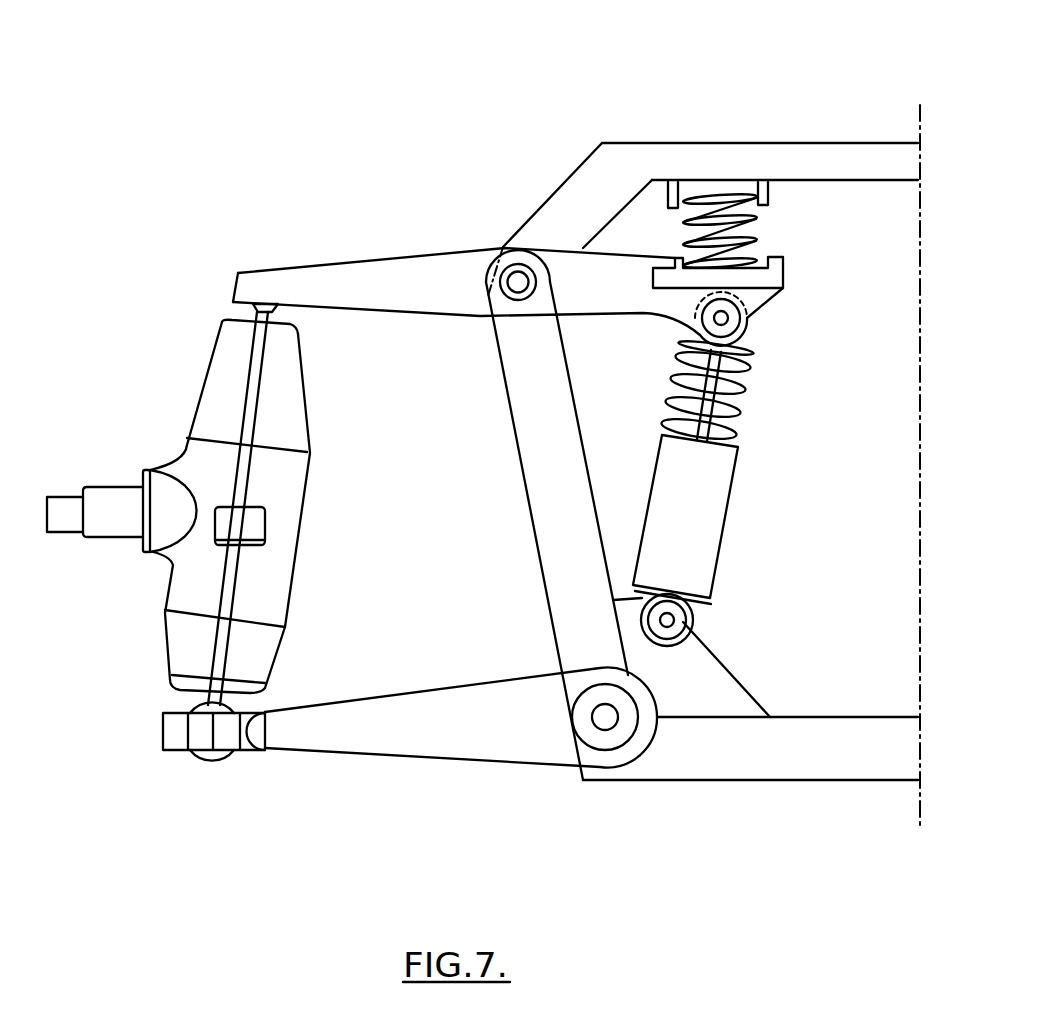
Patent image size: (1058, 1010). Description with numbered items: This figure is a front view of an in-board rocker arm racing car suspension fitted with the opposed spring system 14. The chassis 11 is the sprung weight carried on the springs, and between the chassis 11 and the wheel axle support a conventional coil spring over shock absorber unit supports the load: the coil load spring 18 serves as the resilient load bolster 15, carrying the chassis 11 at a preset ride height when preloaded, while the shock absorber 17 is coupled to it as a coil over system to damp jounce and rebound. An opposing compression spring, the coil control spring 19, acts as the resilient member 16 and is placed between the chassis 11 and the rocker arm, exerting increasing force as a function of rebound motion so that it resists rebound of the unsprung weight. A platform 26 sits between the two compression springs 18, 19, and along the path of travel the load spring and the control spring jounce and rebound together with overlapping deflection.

The chassis 11 is at (826, 143).
The opposed spring system 14 is at (735, 125).
The resilient load bolster 15 is at (740, 428).
The resilient member 16 is at (677, 220).
The shock absorber 17 is at (717, 520).
The coil load spring 18 is at (748, 382).
The coil control spring 19 is at (765, 222).
The platform 26 is at (757, 303).